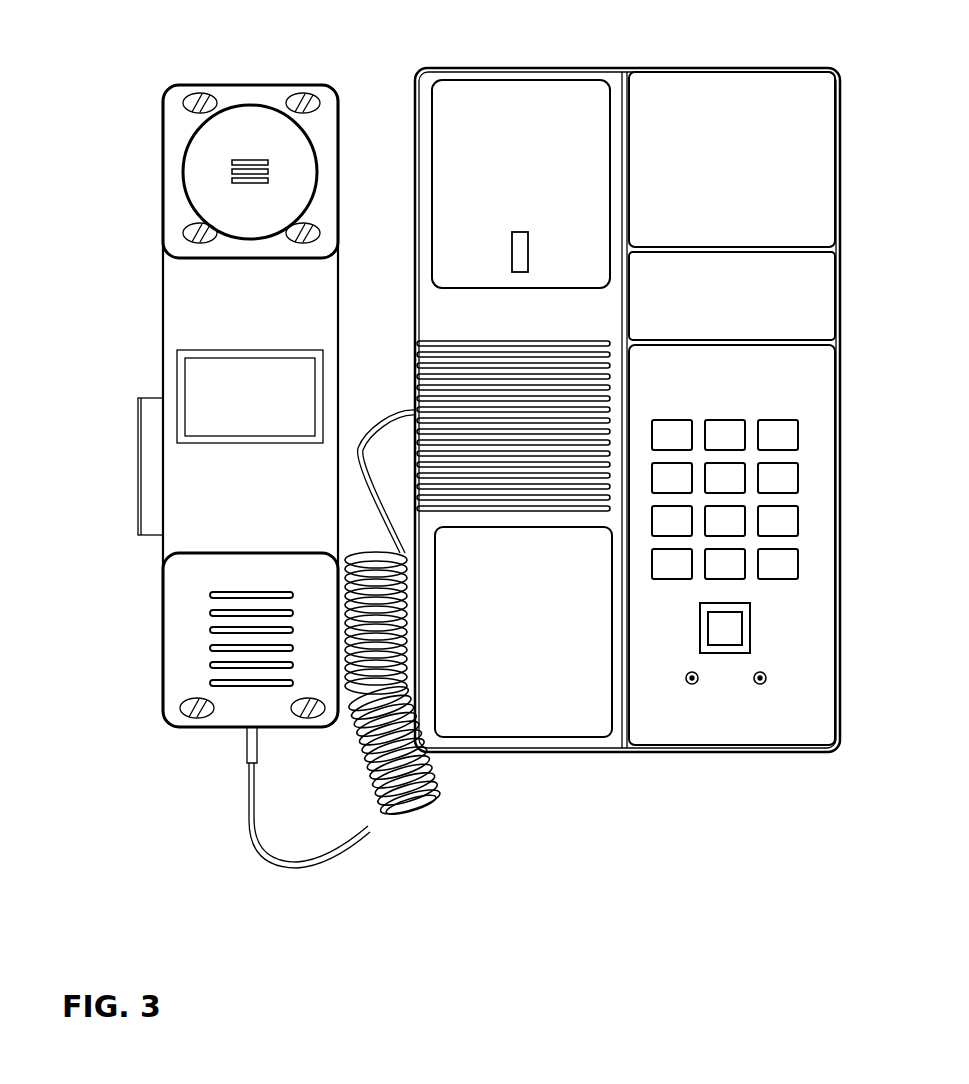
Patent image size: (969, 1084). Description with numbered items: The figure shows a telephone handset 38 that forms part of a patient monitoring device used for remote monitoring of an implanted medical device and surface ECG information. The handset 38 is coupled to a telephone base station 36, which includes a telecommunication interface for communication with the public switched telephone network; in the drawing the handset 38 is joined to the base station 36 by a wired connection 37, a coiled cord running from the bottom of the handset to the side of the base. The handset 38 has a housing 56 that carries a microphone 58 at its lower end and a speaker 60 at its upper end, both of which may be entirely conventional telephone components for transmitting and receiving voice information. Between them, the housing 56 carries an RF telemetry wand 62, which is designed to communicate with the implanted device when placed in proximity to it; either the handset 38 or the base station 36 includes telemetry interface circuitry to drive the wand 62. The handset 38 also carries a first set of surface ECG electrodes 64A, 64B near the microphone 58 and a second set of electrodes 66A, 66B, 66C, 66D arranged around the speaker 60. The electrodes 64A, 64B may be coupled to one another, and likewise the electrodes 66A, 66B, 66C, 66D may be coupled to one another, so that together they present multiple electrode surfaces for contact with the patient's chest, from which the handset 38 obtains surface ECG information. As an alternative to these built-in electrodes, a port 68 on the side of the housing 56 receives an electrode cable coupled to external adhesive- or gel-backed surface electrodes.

The telephone handset 38 is at (97, 107).
The telephone base station 36 is at (840, 302).
The wired connection 37 is at (387, 793).
The housing 56 is at (167, 295).
The microphone 58 is at (180, 658).
The speaker 60 is at (191, 168).
The RF telemetry wand 62 is at (187, 362).
The surface ECG electrode 64A is at (195, 728).
The surface ECG electrode 64B is at (308, 728).
The electrode 66A is at (183, 234).
The electrode 66B is at (320, 233).
The electrode 66C is at (200, 95).
The electrode 66D is at (303, 93).
The port 68 is at (138, 475).